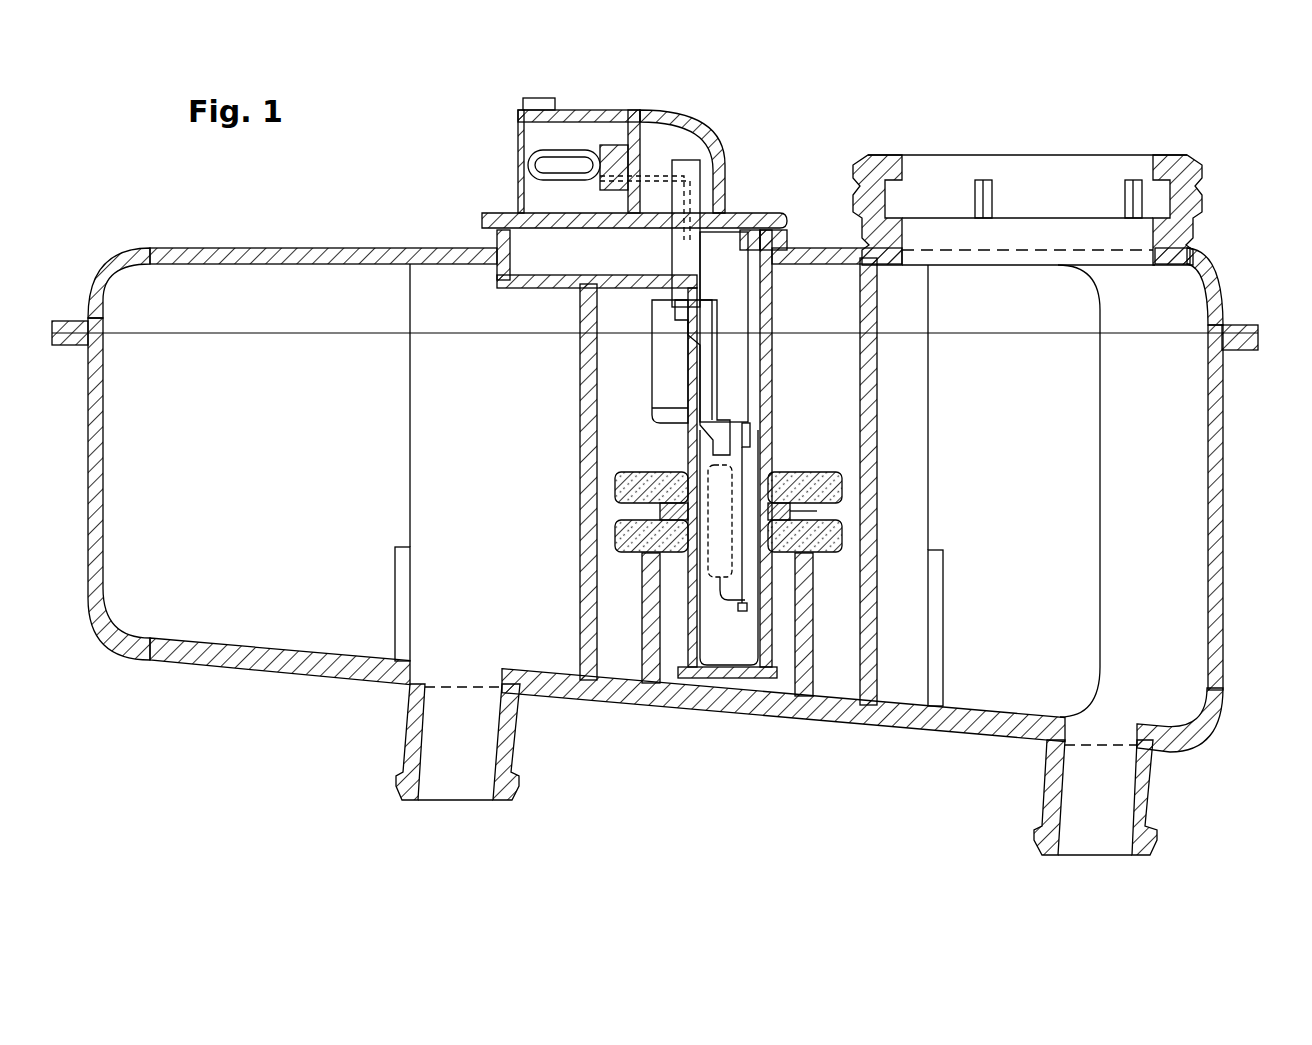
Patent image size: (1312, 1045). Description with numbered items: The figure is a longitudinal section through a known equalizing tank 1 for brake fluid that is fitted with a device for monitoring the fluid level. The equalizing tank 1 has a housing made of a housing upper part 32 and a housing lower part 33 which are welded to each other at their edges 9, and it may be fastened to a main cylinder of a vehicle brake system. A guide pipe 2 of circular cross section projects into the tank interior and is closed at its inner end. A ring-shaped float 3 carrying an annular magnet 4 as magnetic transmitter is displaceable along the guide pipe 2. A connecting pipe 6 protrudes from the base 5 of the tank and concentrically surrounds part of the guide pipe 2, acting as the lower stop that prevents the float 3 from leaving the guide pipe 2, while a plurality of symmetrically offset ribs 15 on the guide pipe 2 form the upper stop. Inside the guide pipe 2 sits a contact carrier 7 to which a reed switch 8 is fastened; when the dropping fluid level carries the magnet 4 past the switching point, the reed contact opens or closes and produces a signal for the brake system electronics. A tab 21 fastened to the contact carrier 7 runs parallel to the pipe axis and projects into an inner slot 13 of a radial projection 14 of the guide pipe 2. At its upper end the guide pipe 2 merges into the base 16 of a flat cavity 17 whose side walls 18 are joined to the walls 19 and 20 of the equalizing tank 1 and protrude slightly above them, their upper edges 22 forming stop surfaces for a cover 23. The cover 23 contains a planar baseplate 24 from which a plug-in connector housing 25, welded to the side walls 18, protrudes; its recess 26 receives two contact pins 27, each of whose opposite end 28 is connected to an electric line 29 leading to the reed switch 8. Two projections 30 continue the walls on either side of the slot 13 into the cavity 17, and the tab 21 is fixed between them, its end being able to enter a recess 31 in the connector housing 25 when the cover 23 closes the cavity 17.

The equalizing tank 1 is at (670, 387).
The guide pipe 2 is at (688, 380).
The float 3 is at (825, 470).
The annular magnet 4 is at (815, 513).
The base 5 is at (855, 720).
The connecting pipe 6 is at (652, 600).
The contact carrier 7 is at (710, 617).
The reed switch 8 is at (755, 462).
The edges 9 is at (1262, 335).
The inner slot 13 is at (705, 293).
The radial projection 14 is at (693, 308).
The ribs 15 is at (675, 412).
The base 16 is at (647, 267).
The flat cavity 17 is at (533, 257).
The side walls 18 is at (495, 240).
The wall 19 is at (862, 262).
The wall 20 is at (450, 262).
The tab 21 is at (707, 350).
The upper edges 22 is at (500, 222).
The cover 23 is at (607, 130).
The planar baseplate 24 is at (740, 208).
The plug-in connector housing 25 is at (640, 120).
The recess 26 is at (560, 128).
The contact pins 27 is at (538, 165).
The end 28 is at (662, 172).
The electric lines 29 is at (750, 352).
The projections 30 is at (605, 482).
The recess 31 is at (662, 137).
The housing upper part 32 is at (1258, 337).
The housing lower part 33 is at (1215, 560).